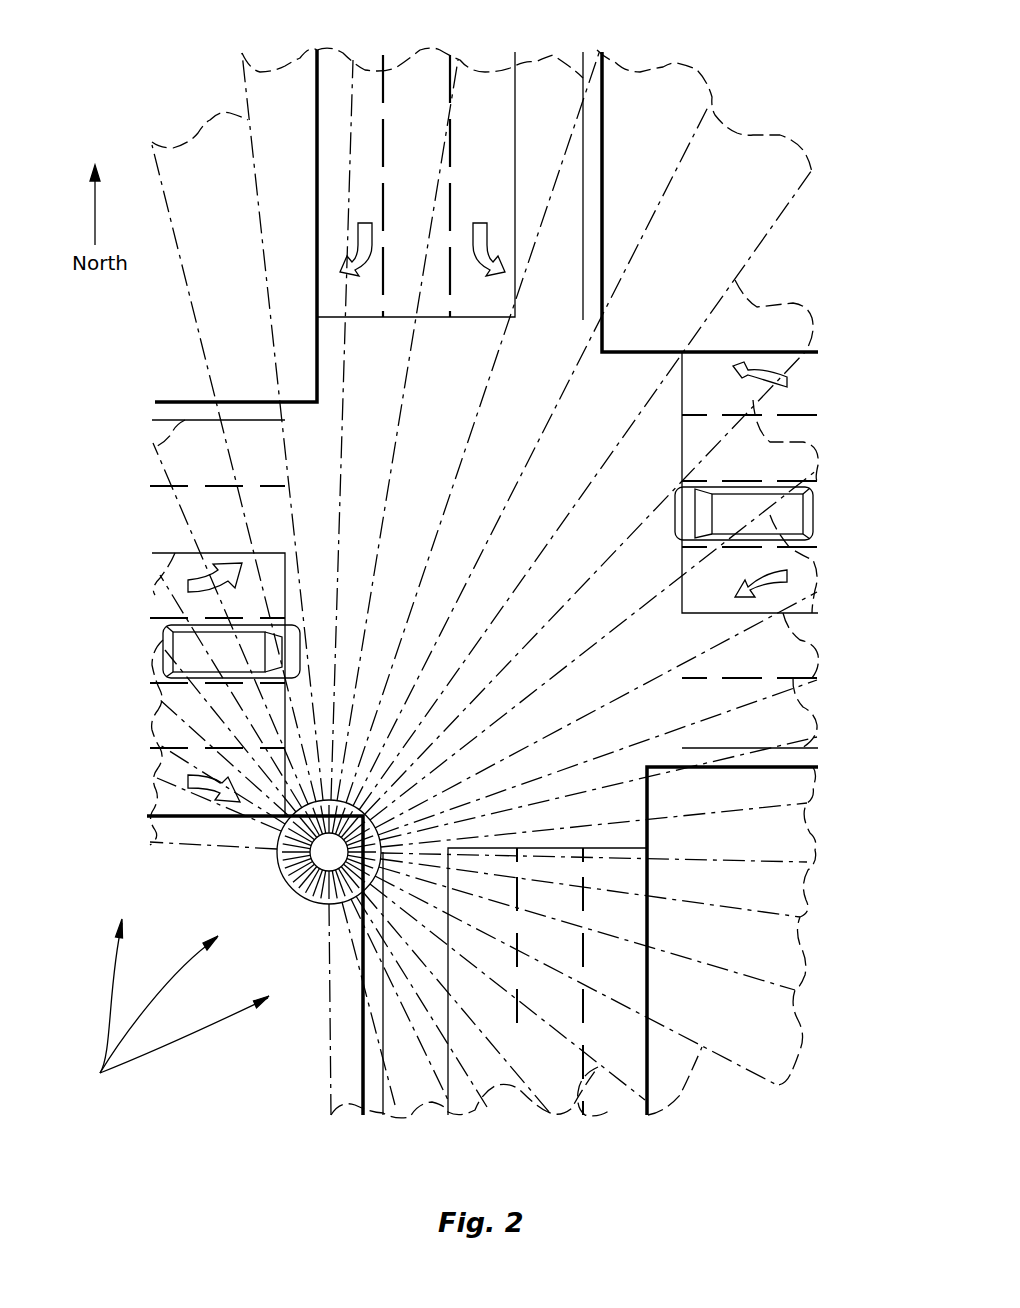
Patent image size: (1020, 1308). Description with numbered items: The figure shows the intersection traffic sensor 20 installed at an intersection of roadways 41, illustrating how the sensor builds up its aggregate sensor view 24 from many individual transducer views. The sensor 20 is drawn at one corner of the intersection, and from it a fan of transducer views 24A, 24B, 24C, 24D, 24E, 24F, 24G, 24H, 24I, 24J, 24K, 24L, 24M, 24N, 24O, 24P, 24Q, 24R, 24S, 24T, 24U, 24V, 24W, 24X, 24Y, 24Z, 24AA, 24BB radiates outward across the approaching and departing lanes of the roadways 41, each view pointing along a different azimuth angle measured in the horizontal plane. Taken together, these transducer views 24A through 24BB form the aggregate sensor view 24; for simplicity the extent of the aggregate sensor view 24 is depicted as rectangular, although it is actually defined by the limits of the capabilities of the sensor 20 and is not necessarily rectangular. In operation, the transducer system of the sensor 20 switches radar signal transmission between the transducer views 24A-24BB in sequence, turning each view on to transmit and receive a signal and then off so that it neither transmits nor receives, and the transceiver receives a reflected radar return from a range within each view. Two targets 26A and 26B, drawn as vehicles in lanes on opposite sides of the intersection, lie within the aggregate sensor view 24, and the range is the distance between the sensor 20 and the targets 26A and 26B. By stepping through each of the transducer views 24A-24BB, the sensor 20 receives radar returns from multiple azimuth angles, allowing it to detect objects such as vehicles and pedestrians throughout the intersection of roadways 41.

The intersection traffic sensor 20 is at (332, 850).
The aggregate sensor view 24 is at (283, 843).
The transducer view 24A is at (343, 1115).
The transducer view 24B is at (420, 1115).
The transducer view 24C is at (478, 1115).
The transducer view 24D is at (572, 1108).
The transducer view 24E is at (688, 1088).
The transducer view 24F is at (805, 1058).
The transducer view 24G is at (805, 972).
The transducer view 24H is at (806, 905).
The transducer view 24I is at (815, 848).
The transducer view 24J is at (814, 790).
The transducer view 24K is at (814, 720).
The transducer view 24L is at (812, 648).
The transducer view 24M is at (815, 570).
The transducer view 24N is at (812, 445).
The transducer view 24O is at (812, 318).
The transducer view 24P is at (780, 135).
The transducer view 24Q is at (677, 63).
The transducer view 24R is at (536, 62).
The transducer view 24S is at (407, 60).
The transducer view 24T is at (300, 58).
The transducer view 24U is at (210, 123).
The transducer view 24V is at (153, 447).
The transducer view 24W is at (155, 573).
The transducer view 24X is at (155, 657).
The transducer view 24Y is at (158, 697).
The transducer view 24Z is at (160, 745).
The transducer view 24AA is at (157, 778).
The transducer view 24BB is at (153, 842).
The target 26A is at (163, 645).
The target 26B is at (813, 515).
The intersection of roadways 41 is at (169, 1004).